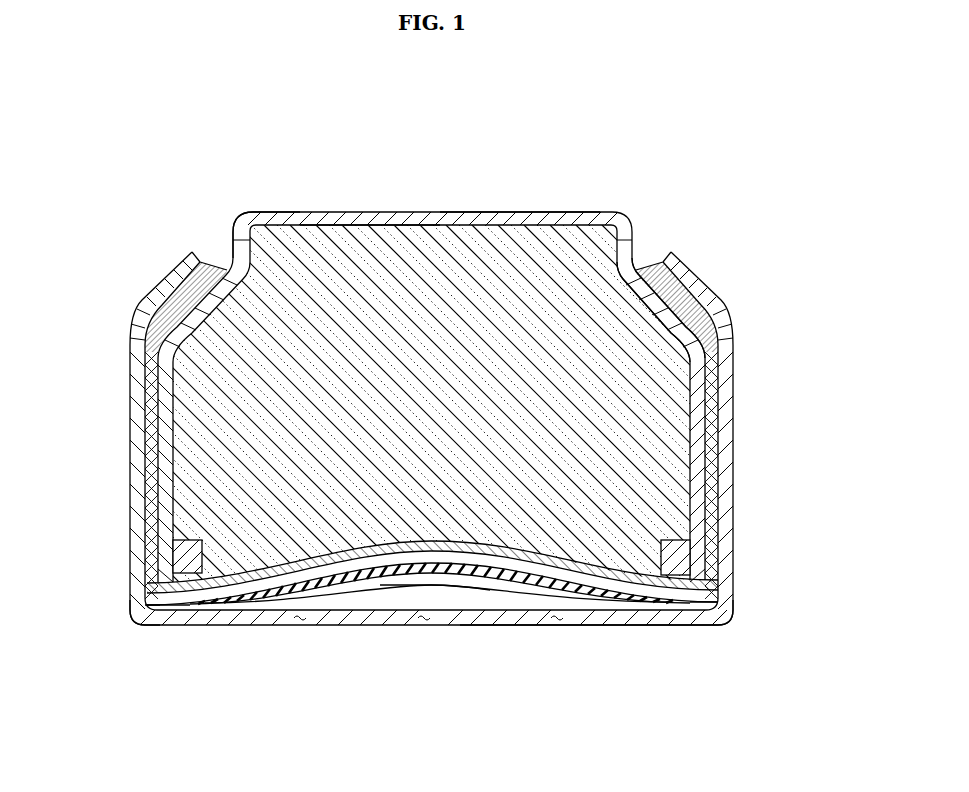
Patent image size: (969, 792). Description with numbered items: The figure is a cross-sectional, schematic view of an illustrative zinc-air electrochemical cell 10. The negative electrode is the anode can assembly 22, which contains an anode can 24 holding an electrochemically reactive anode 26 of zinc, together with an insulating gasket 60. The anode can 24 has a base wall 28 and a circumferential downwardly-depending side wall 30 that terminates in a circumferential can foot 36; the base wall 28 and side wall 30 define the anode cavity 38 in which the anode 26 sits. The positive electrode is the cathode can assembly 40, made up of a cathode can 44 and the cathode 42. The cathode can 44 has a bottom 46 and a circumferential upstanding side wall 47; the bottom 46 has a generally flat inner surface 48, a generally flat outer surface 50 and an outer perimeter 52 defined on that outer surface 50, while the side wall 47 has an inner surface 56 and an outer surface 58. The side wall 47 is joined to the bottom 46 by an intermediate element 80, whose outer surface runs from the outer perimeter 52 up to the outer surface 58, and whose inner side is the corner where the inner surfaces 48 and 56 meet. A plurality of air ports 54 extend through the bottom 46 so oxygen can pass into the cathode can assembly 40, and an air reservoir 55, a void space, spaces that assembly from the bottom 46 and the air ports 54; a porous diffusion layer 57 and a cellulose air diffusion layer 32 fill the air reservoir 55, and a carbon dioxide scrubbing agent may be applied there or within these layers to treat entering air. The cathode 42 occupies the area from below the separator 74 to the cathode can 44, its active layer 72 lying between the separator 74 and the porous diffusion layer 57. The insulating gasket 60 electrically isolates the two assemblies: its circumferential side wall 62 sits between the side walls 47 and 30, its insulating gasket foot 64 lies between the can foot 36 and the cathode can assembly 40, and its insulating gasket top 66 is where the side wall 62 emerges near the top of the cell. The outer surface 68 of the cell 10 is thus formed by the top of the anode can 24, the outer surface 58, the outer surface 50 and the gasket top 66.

The cell 10 is at (266, 184).
The anode can assembly 22 is at (576, 203).
The anode can 24 is at (519, 202).
The anode 26 is at (404, 530).
The base wall 28 is at (375, 212).
The side wall 30 is at (722, 359).
The cellulose air diffusion layer 32 is at (453, 586).
The can foot 36 is at (170, 544).
The anode cavity 38 is at (434, 296).
The cathode can assembly 40 is at (497, 636).
The cathode 42 is at (354, 592).
The cathode can 44 is at (611, 636).
The bottom 46 is at (683, 636).
The side wall 47 is at (120, 396).
The inner surface 48 is at (210, 570).
The outer surface 50 is at (238, 627).
The outer perimeter 52 is at (137, 622).
The air ports 54 is at (300, 624).
The air reservoir 55 is at (518, 602).
The inner surface 56 is at (720, 405).
The porous diffusion layer 57 is at (392, 585).
The outer surface 58 is at (735, 443).
The insulating gasket 60 is at (140, 347).
The side wall 62 is at (152, 433).
The insulating gasket foot 64 is at (700, 566).
The insulating gasket top 66 is at (640, 272).
The outer surface 68 is at (311, 205).
The active layer 72 is at (470, 566).
The separator 74 is at (209, 606).
The intermediate element 80 is at (733, 628).